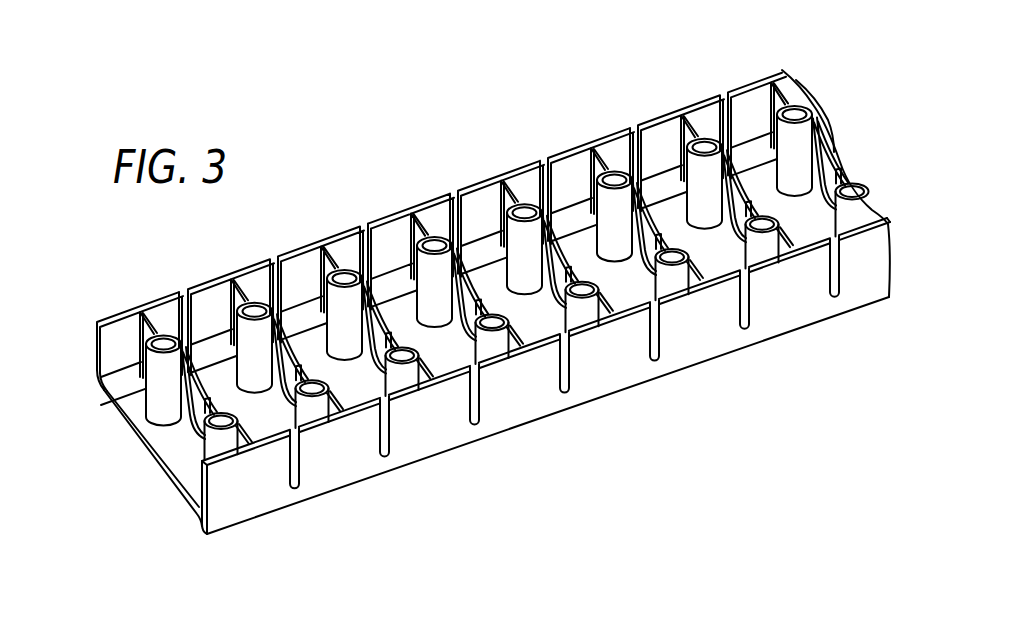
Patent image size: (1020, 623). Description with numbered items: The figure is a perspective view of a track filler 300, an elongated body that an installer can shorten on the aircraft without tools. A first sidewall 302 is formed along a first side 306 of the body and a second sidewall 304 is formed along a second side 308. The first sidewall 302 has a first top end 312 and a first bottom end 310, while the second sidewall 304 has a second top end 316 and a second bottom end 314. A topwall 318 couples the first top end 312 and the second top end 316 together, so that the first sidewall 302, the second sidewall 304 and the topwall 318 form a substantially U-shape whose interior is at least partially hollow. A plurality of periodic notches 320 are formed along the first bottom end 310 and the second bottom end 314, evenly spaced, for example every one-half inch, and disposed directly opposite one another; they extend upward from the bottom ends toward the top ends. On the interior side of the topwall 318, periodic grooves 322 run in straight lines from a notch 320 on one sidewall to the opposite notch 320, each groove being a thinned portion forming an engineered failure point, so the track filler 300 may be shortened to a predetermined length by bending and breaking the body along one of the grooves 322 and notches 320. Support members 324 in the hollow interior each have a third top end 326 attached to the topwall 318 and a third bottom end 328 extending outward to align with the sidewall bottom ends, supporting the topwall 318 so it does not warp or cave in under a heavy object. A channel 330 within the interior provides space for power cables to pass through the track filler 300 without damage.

The track filler 300 is at (846, 90).
The first sidewall 302 is at (488, 179).
The second sidewall 304 is at (607, 352).
The first side 306 is at (112, 410).
The second side 308 is at (187, 503).
The first bottom end 310 is at (97, 324).
The first top end 312 is at (97, 382).
The second bottom end 314 is at (252, 452).
The second top end 316 is at (243, 513).
The topwall 318 is at (140, 452).
The notches 320 is at (570, 373).
The grooves 322 is at (665, 235).
The support members 324 is at (672, 262).
The third top end 326 is at (425, 313).
The third bottom end 328 is at (442, 240).
The channel 330 is at (563, 253).